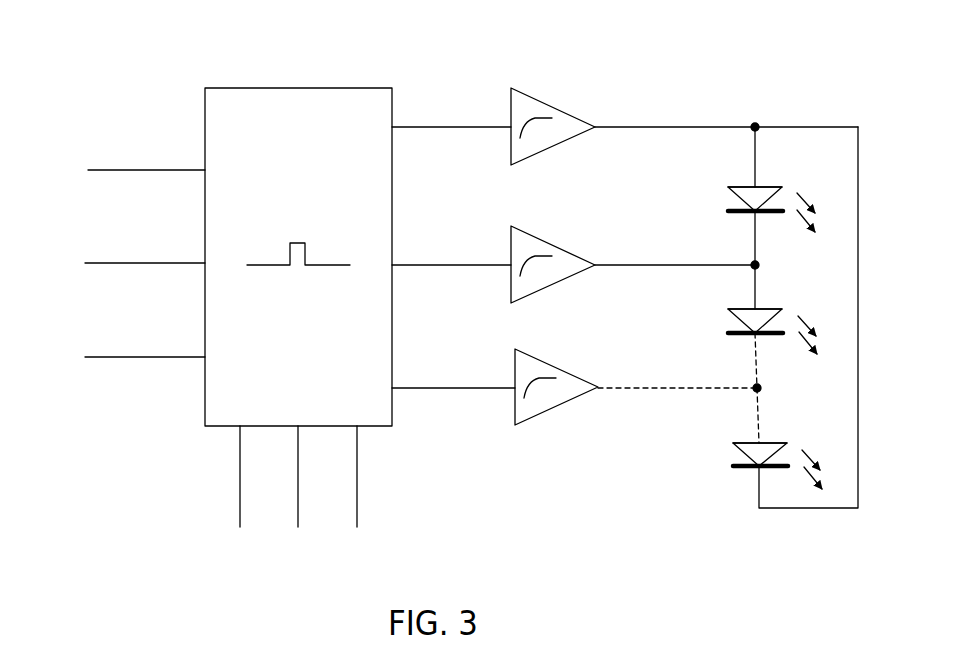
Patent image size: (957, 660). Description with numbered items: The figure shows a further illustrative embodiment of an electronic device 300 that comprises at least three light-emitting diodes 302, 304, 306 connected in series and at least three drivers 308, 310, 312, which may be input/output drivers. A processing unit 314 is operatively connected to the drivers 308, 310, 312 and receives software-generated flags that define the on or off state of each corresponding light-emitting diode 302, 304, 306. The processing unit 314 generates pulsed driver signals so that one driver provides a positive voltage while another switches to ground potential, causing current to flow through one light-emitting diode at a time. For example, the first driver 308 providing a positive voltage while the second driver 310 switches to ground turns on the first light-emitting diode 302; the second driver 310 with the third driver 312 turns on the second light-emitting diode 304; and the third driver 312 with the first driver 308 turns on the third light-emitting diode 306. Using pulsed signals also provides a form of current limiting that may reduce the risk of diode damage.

The electronic device 300 is at (172, 69).
The processing unit 314 is at (313, 87).
The driver 308 is at (560, 138).
The driver 310 is at (565, 278).
The driver 312 is at (562, 405).
The light-emitting diode 302 is at (748, 186).
The light-emitting diode 304 is at (752, 308).
The light-emitting diode 306 is at (750, 442).